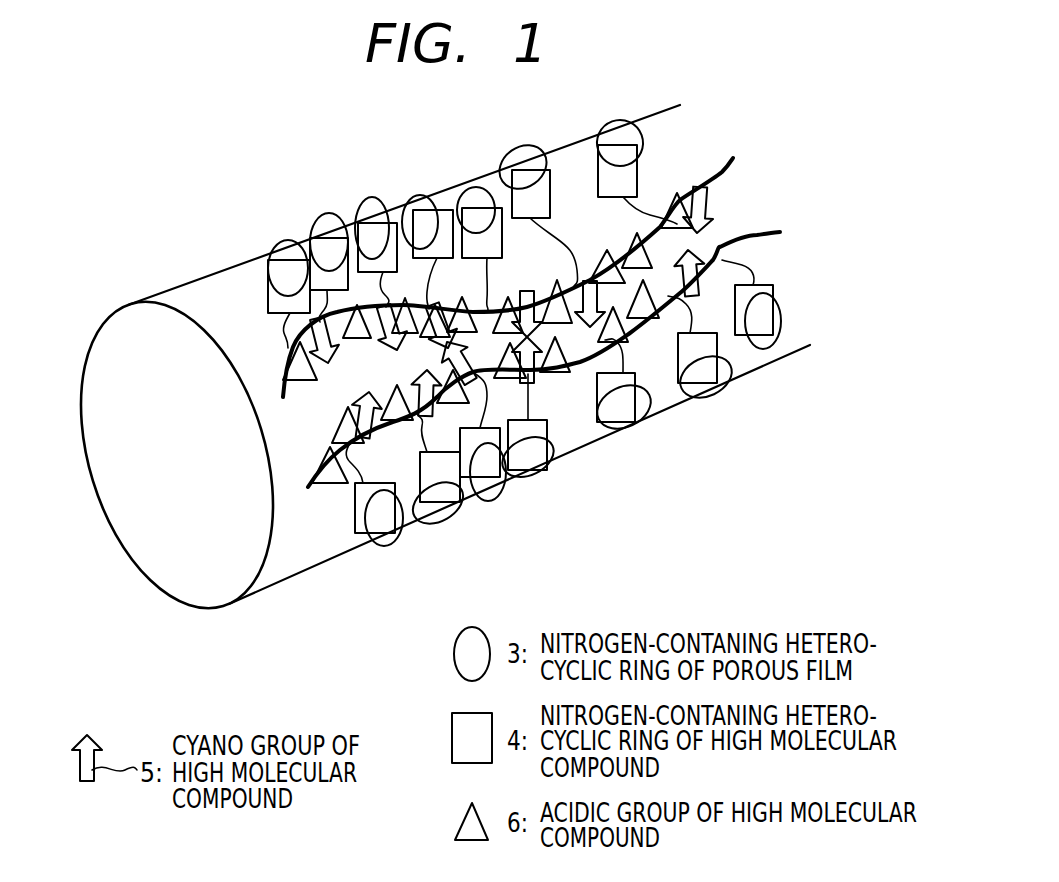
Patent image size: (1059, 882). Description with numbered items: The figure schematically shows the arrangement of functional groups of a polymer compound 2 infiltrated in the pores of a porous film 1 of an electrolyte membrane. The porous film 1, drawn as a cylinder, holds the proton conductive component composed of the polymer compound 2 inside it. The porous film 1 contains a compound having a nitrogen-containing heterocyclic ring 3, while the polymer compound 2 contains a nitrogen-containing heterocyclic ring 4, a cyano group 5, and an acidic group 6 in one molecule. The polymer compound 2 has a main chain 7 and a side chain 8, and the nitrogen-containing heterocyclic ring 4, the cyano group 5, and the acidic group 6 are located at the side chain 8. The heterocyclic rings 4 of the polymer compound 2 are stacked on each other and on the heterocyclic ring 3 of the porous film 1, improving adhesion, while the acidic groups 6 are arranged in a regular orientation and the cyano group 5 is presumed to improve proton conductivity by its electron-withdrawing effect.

The porous film 1 is at (97, 378).
The polymer compound 2 is at (287, 353).
The nitrogen-containing heterocyclic ring 3 is at (780, 330).
The nitrogen-containing heterocyclic ring 4 is at (780, 288).
The cyano group 5 is at (708, 201).
The acidic group 6 is at (688, 238).
The main chain 7 is at (780, 232).
The side chain 8 is at (753, 267).